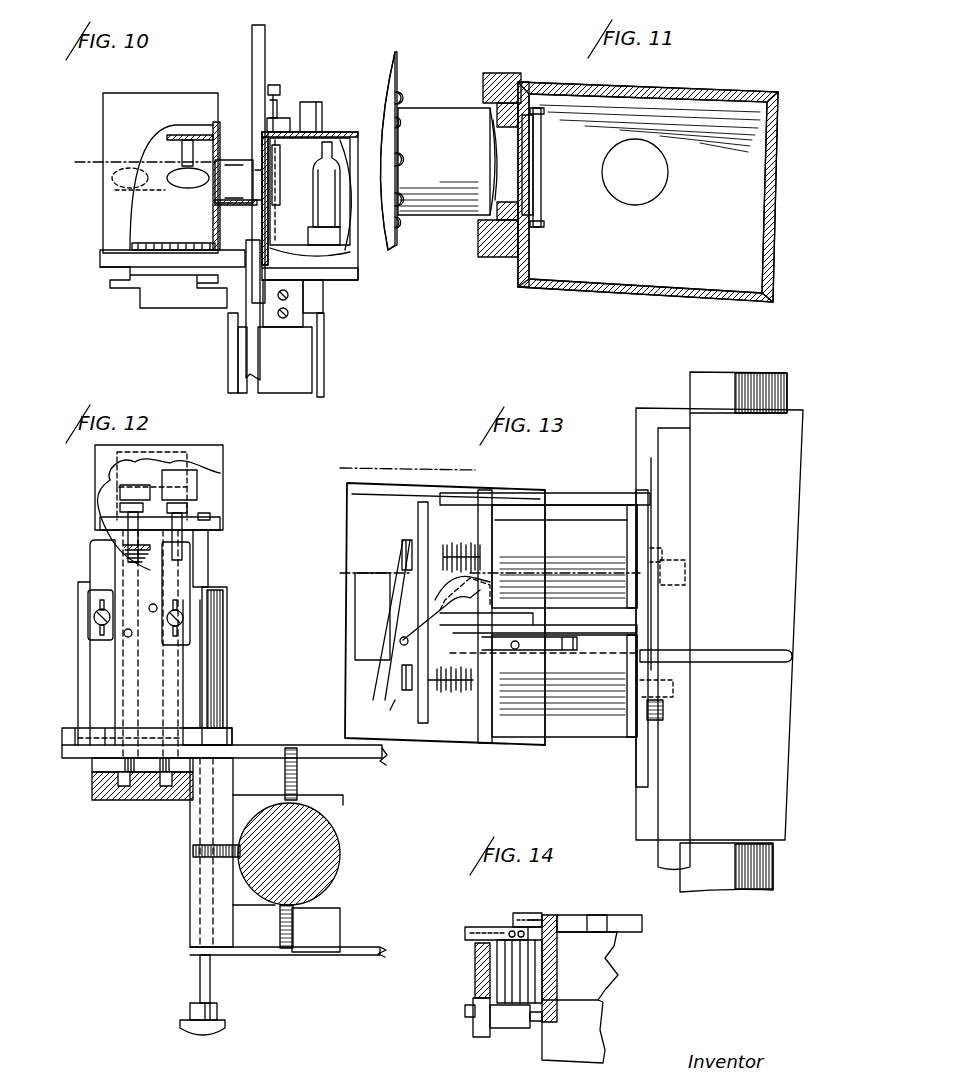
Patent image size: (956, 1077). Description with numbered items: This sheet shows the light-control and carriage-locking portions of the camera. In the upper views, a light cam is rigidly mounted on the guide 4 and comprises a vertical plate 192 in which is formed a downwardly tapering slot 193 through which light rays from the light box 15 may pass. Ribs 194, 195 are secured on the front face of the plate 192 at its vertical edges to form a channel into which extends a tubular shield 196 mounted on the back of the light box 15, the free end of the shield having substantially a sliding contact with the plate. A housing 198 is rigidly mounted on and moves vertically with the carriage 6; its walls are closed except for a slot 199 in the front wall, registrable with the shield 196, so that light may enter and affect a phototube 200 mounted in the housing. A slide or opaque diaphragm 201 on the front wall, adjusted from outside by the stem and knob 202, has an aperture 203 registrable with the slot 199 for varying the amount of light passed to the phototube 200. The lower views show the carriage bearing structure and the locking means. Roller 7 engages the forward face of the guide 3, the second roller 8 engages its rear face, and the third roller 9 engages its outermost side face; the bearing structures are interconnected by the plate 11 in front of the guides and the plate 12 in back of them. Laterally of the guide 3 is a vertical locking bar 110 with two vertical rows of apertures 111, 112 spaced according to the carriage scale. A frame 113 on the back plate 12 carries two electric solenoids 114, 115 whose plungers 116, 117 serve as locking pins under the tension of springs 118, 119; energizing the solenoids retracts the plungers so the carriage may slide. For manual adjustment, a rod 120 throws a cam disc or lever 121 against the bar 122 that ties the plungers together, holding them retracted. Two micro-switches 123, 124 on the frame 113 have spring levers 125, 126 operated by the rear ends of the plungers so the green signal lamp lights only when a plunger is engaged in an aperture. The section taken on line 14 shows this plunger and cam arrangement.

In FIG. 12, the guide 3 is at (331, 859).
In FIG. 13, the guide 3 is at (705, 383).
In FIG. 10, the guide 4 is at (292, 385).
In FIG. 12, the carriage 6 is at (320, 945).
In FIG. 12, the roller 7 is at (285, 951).
In FIG. 12, the second roller 8 is at (292, 750).
In FIG. 12, the third roller 9 is at (196, 852).
In FIG. 10, the plate 11 is at (78, 145).
In FIG. 12, the plate 11 is at (359, 951).
In FIG. 10, the plate 12 is at (324, 356).
In FIG. 12, the plate 12 is at (66, 751).
In FIG. 13, the plate 12 is at (336, 450).
In FIG. 13, the section line 14— 14 is at (337, 558).
In FIG. 10, the light box 15 is at (103, 118).
In FIG. 11, the light box 15 is at (392, 78).
In FIG. 12, the locking bar 110 is at (136, 801).
In FIG. 13, the locking bar 110 is at (681, 784).
In FIG. 12, the apertures 111 is at (112, 808).
In FIG. 13, the apertures 111 is at (673, 682).
In FIG. 12, the apertures 112 is at (171, 801).
In FIG. 13, the apertures 112 is at (676, 582).
In FIG. 12, the frame 113 is at (92, 677).
In FIG. 13, the frame 113 is at (496, 516).
In FIG. 14, the frame 113 is at (556, 981).
In FIG. 12, the electric solenoid 114 is at (201, 704).
In FIG. 13, the electric solenoid 114 is at (576, 531).
In FIG. 12, the electric solenoid 115 is at (92, 704).
In FIG. 13, the electric solenoid 115 is at (588, 710).
In FIG. 14, the electric solenoid 115 is at (588, 1028).
In FIG. 12, the plunger 116 is at (221, 727).
In FIG. 13, the plunger 116 is at (665, 546).
In FIG. 12, the plunger 117 is at (99, 769).
In FIG. 13, the plunger 117 is at (566, 689).
In FIG. 13, the spring 118 is at (455, 546).
In FIG. 13, the spring 119 is at (461, 696).
In FIG. 12, the rod 120 is at (206, 968).
In FIG. 13, the rod 120 is at (744, 656).
In FIG. 14, the rod 120 is at (617, 918).
In FIG. 14, the cam disc or lever 121 is at (527, 958).
In FIG. 12, the bar 122 is at (216, 525).
In FIG. 13, the bar 122 is at (418, 506).
In FIG. 14, the bar 122 is at (479, 963).
In FIG. 12, the micro-switch 123 is at (178, 473).
In FIG. 13, the micro-switch 123 is at (363, 553).
In FIG. 12, the micro-switch 124 is at (130, 481).
In FIG. 13, the micro-switch 124 is at (360, 671).
In FIG. 12, the spring lever 125 is at (182, 501).
In FIG. 13, the spring lever 125 is at (405, 551).
In FIG. 12, the spring lever 126 is at (126, 505).
In FIG. 13, the spring lever 126 is at (396, 680).
In FIG. 10, the vertical plate 192 is at (268, 36).
In FIG. 11, the vertical plate 192 is at (526, 249).
In FIG. 11, the slot 193 is at (510, 150).
In FIG. 10, the rib 194 is at (257, 31).
In FIG. 11, the rib 194 is at (497, 73).
In FIG. 10, the rib 195 is at (250, 346).
In FIG. 11, the rib 195 is at (486, 240).
In FIG. 10, the tubular shield 196 is at (231, 160).
In FIG. 11, the tubular shield 196 is at (438, 120).
In FIG. 10, the housing 198 is at (338, 132).
In FIG. 11, the housing 198 is at (742, 93).
In FIG. 10, the slot 199 is at (262, 215).
In FIG. 11, the slot 199 is at (535, 166).
In FIG. 10, the phototube 200 is at (332, 226).
In FIG. 11, the phototube 200 is at (654, 181).
In FIG. 10, the slide or opaque diaphragm 201 is at (265, 207).
In FIG. 11, the slide or opaque diaphragm 201 is at (541, 201).
In FIG. 10, the stem and knob 202 is at (276, 85).
In FIG. 10, the aperture 203 is at (248, 198).